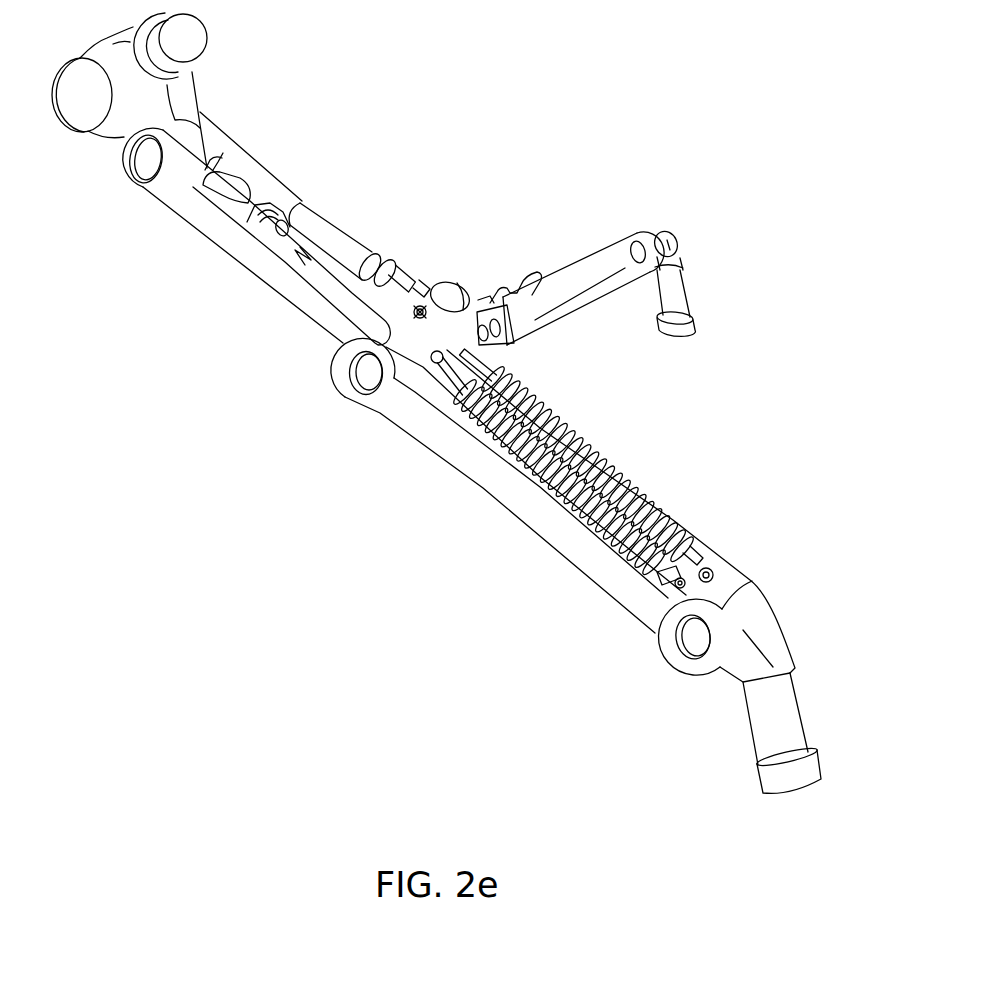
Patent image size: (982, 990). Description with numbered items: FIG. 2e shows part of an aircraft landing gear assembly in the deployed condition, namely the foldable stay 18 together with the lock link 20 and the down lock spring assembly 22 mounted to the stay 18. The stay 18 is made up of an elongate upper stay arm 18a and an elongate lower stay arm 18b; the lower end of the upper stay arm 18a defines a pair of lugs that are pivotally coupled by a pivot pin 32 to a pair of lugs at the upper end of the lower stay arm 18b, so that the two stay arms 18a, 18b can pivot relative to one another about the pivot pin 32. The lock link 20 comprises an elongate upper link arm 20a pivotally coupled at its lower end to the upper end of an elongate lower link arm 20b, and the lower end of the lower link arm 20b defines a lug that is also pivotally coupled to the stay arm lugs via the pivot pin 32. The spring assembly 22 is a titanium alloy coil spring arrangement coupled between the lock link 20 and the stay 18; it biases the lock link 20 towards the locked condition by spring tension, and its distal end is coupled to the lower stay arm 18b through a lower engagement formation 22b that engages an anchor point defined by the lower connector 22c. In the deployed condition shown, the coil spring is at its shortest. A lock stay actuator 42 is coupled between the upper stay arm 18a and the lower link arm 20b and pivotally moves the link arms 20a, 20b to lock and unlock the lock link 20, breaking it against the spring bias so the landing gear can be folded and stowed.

The foldable stay 18 is at (290, 320).
The upper stay arm 18a is at (250, 270).
The lower stay arm 18b is at (486, 488).
The lock link 20 is at (566, 260).
The upper link arm 20a is at (625, 244).
The lower link arm 20b is at (460, 290).
The down lock spring assembly 22 is at (596, 437).
The lower engagement formation 22b is at (664, 585).
The lower connector 22c is at (674, 594).
The pivot pin 32 is at (367, 377).
The lock stay actuator 42 is at (370, 226).